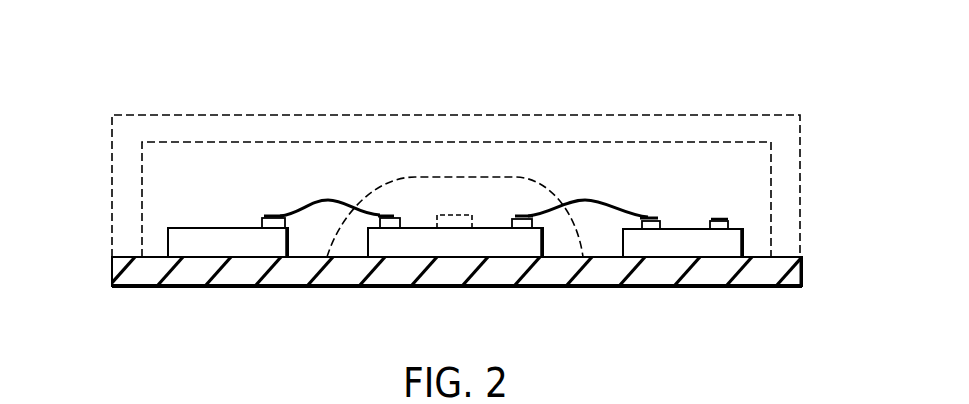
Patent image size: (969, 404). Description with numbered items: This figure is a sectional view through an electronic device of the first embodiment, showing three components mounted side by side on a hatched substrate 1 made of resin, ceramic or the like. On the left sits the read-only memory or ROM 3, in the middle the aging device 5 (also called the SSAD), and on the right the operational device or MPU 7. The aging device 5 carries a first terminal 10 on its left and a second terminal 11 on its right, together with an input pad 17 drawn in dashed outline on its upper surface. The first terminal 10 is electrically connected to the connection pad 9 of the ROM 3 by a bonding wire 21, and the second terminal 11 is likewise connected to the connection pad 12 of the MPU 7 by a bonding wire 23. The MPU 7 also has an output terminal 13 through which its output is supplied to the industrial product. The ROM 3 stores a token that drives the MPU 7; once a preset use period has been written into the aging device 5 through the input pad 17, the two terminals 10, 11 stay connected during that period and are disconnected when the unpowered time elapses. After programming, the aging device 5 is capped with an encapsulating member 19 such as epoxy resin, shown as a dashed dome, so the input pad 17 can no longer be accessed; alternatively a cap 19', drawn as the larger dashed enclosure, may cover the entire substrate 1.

The substrate 1 is at (766, 273).
The read-only memory (ROM) 3 is at (219, 237).
The aging device 5 is at (453, 239).
The micro-processing unit (MPU) 7 is at (690, 239).
The connection pad 9 is at (272, 222).
The first terminal 10 is at (389, 222).
The second terminal 11 is at (524, 222).
The connection pad 12 is at (650, 222).
The output terminal 13 is at (721, 222).
The input pad 17 is at (453, 214).
The encapsulating member 19 is at (455, 165).
The cap 19' is at (456, 149).
The bonding wire 21 is at (312, 201).
The bonding wire 23 is at (602, 203).